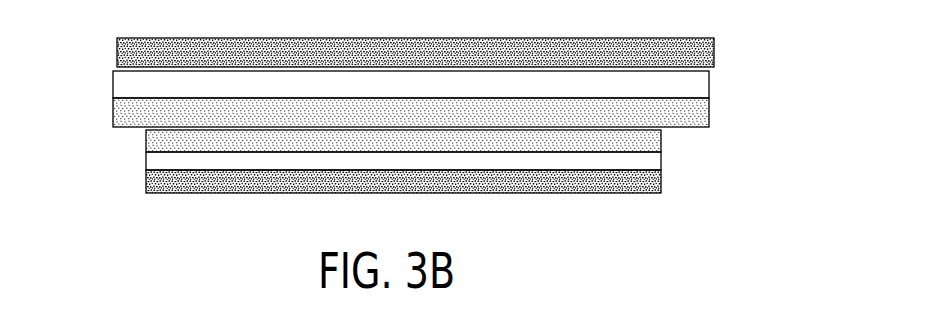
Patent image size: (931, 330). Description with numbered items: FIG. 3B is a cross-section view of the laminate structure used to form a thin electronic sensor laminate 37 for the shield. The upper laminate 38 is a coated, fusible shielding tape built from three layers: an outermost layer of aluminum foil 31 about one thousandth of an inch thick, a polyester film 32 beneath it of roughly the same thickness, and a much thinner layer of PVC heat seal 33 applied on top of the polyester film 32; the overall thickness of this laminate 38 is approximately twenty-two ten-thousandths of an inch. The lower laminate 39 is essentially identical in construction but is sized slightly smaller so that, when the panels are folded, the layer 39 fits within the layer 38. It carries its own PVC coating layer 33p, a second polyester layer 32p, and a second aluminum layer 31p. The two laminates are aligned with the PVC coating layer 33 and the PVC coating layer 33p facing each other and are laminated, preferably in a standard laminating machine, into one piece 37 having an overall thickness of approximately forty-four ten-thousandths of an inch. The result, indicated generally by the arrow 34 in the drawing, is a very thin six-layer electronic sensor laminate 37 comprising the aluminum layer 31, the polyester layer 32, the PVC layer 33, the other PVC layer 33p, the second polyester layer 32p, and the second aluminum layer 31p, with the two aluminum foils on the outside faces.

The layer of aluminum foil 31 is at (715, 52).
The polyester film 32 is at (710, 83).
The PVC heat seal layer 33 is at (440, 102).
The PVC coating layer 33p is at (661, 138).
The second polyester layer 32p is at (661, 160).
The second aluminum layer 31p is at (433, 190).
The laminate assembly 34 is at (86, 145).
The electronic sensor laminate 37 is at (818, 62).
The laminate 38 is at (462, 68).
The laminate 39 is at (451, 170).